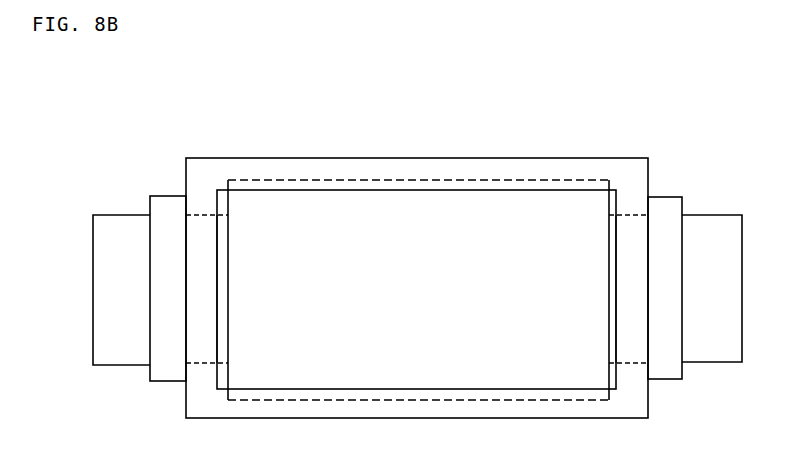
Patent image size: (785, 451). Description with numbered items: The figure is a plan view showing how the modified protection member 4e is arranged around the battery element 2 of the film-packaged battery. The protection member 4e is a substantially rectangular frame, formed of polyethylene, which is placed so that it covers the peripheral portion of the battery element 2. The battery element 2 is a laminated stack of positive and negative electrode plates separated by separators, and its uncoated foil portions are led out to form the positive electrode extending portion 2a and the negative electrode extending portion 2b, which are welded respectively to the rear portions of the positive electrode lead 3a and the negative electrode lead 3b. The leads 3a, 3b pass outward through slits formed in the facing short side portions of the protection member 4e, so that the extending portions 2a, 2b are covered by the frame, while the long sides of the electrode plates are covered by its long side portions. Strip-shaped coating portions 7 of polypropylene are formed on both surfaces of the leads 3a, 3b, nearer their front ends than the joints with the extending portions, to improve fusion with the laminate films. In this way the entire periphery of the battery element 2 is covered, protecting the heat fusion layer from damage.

The battery element 2 is at (471, 179).
The positive electrode extending portion 2a is at (202, 227).
The negative electrode extending portion 2b is at (632, 216).
The positive electrode lead 3a is at (109, 222).
The negative electrode lead 3b is at (715, 220).
The protection member 4e is at (358, 148).
The coating portion 7 is at (165, 204).